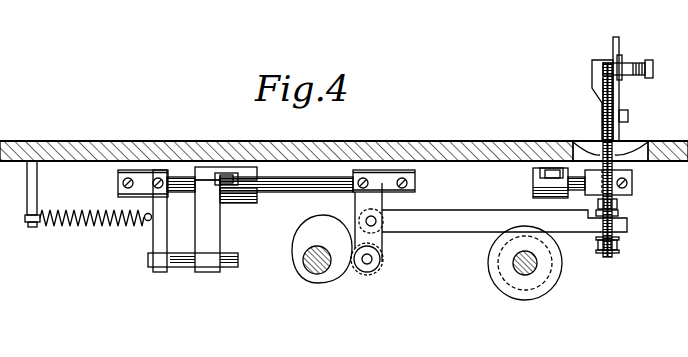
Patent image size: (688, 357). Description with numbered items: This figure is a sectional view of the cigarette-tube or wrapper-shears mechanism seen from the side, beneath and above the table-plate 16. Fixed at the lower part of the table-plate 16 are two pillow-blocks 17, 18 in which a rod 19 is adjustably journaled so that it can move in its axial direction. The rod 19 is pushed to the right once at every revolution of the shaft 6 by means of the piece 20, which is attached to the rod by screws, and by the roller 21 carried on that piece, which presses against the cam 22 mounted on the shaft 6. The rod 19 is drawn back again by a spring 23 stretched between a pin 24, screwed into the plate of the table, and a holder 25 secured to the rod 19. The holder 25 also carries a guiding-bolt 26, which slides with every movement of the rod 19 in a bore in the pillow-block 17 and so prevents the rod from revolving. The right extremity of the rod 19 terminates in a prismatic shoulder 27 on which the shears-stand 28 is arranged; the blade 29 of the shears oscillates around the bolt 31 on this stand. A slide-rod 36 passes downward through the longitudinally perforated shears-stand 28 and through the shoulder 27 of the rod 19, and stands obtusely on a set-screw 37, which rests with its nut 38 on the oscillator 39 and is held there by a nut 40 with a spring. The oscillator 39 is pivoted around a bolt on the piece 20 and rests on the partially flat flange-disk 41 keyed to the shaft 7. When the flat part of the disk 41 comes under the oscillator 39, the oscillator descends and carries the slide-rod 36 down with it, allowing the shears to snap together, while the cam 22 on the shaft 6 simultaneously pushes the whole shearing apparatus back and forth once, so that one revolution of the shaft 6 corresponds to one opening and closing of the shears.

The table-plate 16 is at (300, 128).
The pin 24 is at (37, 184).
The spring 23 is at (92, 231).
The holder 25 is at (153, 237).
The rod 19 is at (316, 188).
The guiding-bolt 26 is at (180, 270).
The pillow-block 17 is at (234, 199).
The piece 20 is at (367, 201).
The roller 21 is at (362, 275).
The cam 22 is at (302, 240).
The shaft 6 is at (313, 276).
The oscillator 39 is at (422, 228).
The shaft 7 is at (512, 262).
The flange-disk 41 is at (541, 285).
The pillow-block 18 is at (537, 192).
The prismatic shoulder 27 is at (632, 180).
The slide-rod 36 is at (606, 116).
The shears-stand 28 is at (597, 92).
The blade 29 is at (620, 40).
The bolt 31 is at (609, 62).
The set-screw 37 is at (617, 205).
The washer 38 is at (618, 215).
The nut 40 is at (619, 243).